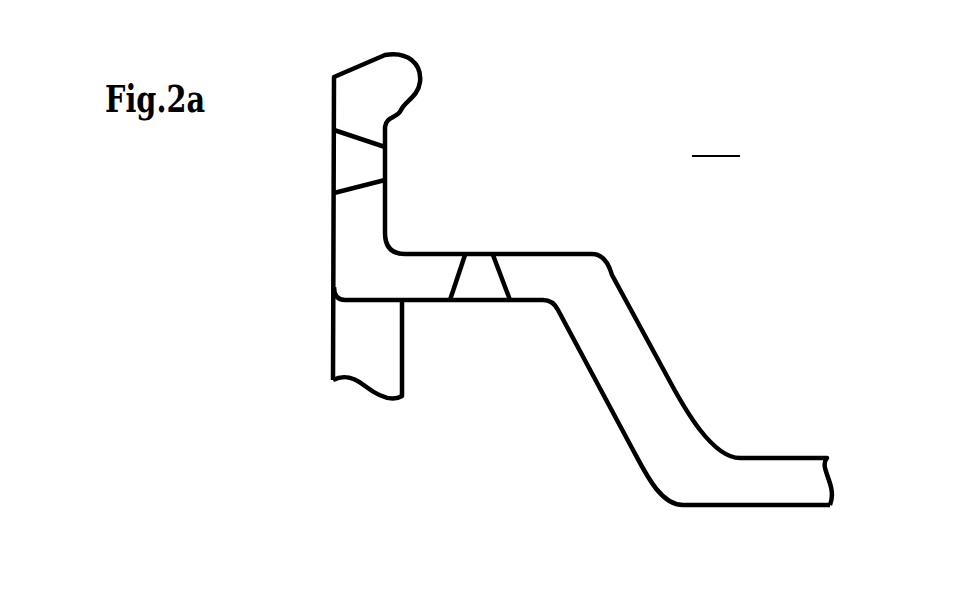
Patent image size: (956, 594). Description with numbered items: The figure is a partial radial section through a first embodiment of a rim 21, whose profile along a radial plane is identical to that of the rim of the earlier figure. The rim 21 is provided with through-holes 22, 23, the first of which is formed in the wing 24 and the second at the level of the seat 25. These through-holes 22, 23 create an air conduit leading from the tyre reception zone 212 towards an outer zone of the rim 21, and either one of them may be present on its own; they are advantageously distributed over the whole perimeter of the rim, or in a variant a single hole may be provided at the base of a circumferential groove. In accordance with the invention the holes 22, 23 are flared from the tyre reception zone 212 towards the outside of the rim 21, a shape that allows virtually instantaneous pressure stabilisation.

The rim 21 is at (517, 313).
The through-hole 22 is at (353, 163).
The through-hole 23 is at (487, 273).
The wing 24 is at (347, 223).
The seat 25 is at (530, 285).
The tyre reception zone 212 is at (716, 142).